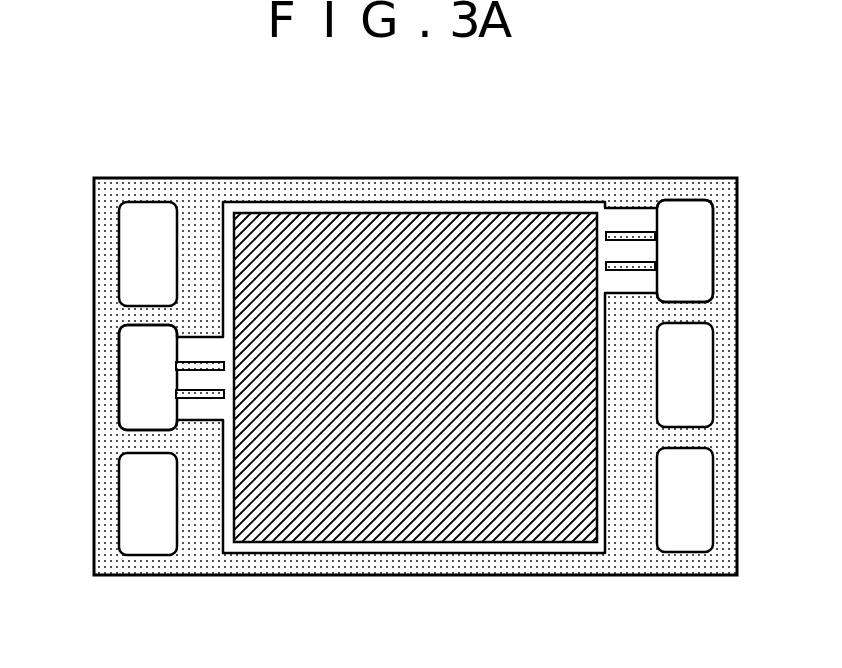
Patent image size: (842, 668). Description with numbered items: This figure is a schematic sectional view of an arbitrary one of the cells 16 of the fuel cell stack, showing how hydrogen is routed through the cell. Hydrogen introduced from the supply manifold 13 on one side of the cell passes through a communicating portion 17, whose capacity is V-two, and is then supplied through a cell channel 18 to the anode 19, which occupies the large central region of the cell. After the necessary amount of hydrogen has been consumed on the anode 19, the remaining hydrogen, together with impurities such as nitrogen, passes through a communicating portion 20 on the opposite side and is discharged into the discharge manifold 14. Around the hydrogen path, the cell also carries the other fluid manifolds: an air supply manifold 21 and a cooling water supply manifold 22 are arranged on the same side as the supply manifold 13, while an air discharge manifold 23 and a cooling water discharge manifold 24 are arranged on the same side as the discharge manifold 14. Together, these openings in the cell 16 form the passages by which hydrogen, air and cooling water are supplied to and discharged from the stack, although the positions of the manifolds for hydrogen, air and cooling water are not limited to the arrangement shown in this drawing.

The cell 16 is at (430, 648).
The cell channel 18 is at (302, 207).
The anode 19 is at (465, 235).
The supply manifold 13 is at (135, 387).
The discharge manifold 14 is at (700, 245).
The communicating portion 17 is at (210, 347).
The communicating portion 20 is at (627, 225).
The air supply manifold 21 is at (135, 261).
The cooling water supply manifold 22 is at (135, 512).
The air discharge manifold 23 is at (700, 496).
The cooling water discharge manifold 24 is at (700, 373).